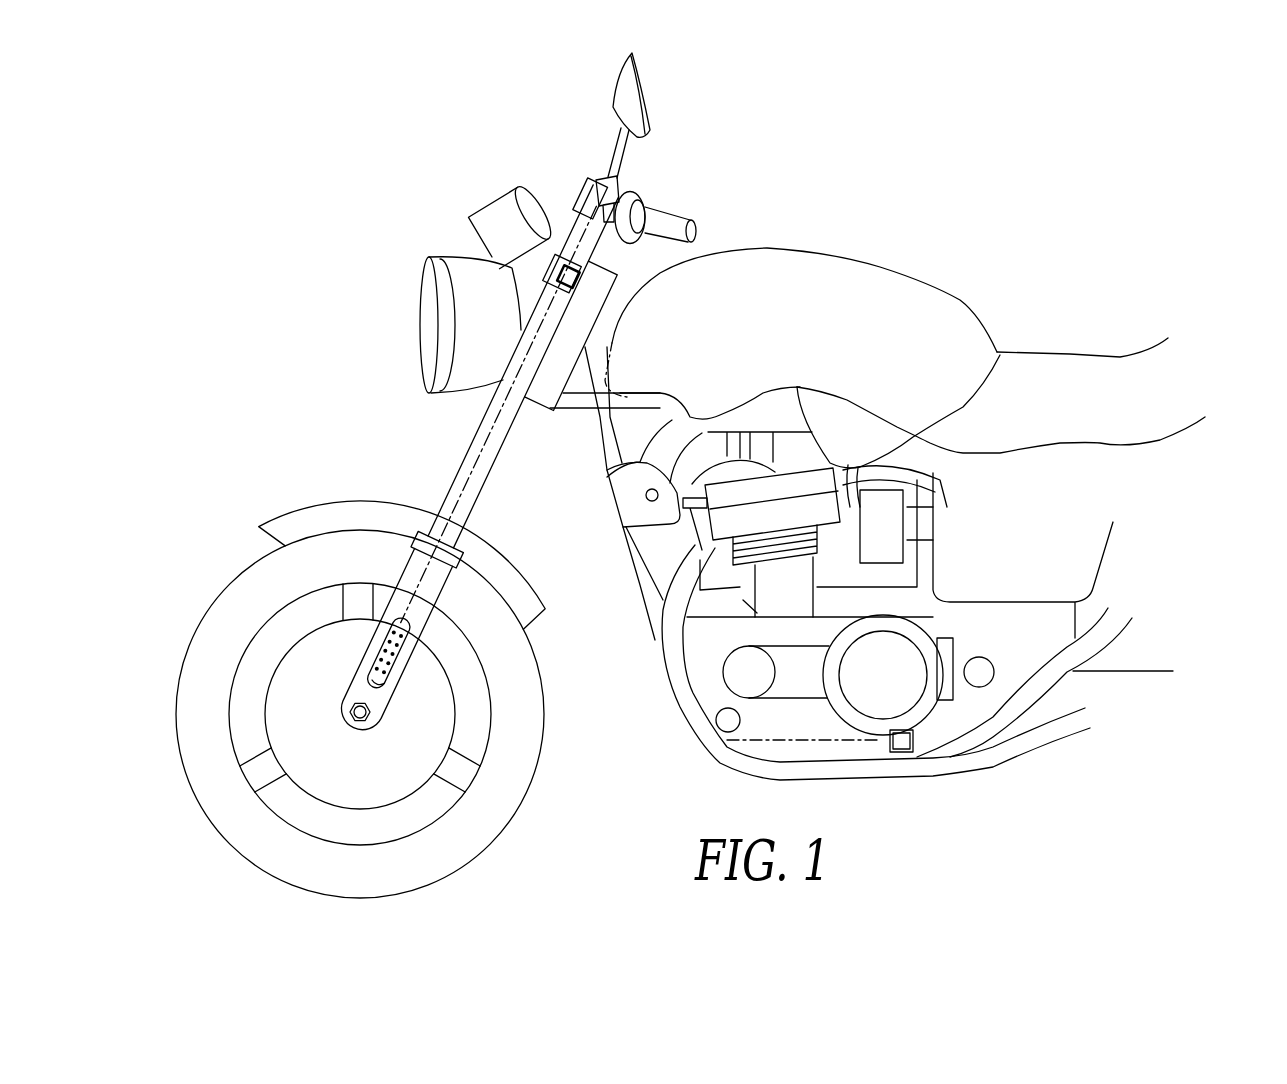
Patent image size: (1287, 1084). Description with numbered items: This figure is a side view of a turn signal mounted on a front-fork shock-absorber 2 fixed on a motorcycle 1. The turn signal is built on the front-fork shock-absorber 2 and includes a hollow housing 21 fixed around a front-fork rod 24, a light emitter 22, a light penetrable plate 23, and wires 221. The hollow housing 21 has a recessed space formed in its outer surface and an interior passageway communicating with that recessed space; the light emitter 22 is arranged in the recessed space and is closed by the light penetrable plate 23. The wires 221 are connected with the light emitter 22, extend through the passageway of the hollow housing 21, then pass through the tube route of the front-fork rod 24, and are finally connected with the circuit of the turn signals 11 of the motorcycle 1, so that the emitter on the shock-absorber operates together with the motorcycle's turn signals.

The motorcycle 1 is at (901, 263).
The turn signals 11 is at (572, 193).
The front-fork shock-absorber 2 is at (443, 452).
The hollow housing 21 is at (440, 578).
The light emitter 22 is at (395, 655).
The wires 221 is at (467, 487).
The light penetrable plate 23 is at (387, 676).
The front-fork rod 24 is at (512, 418).